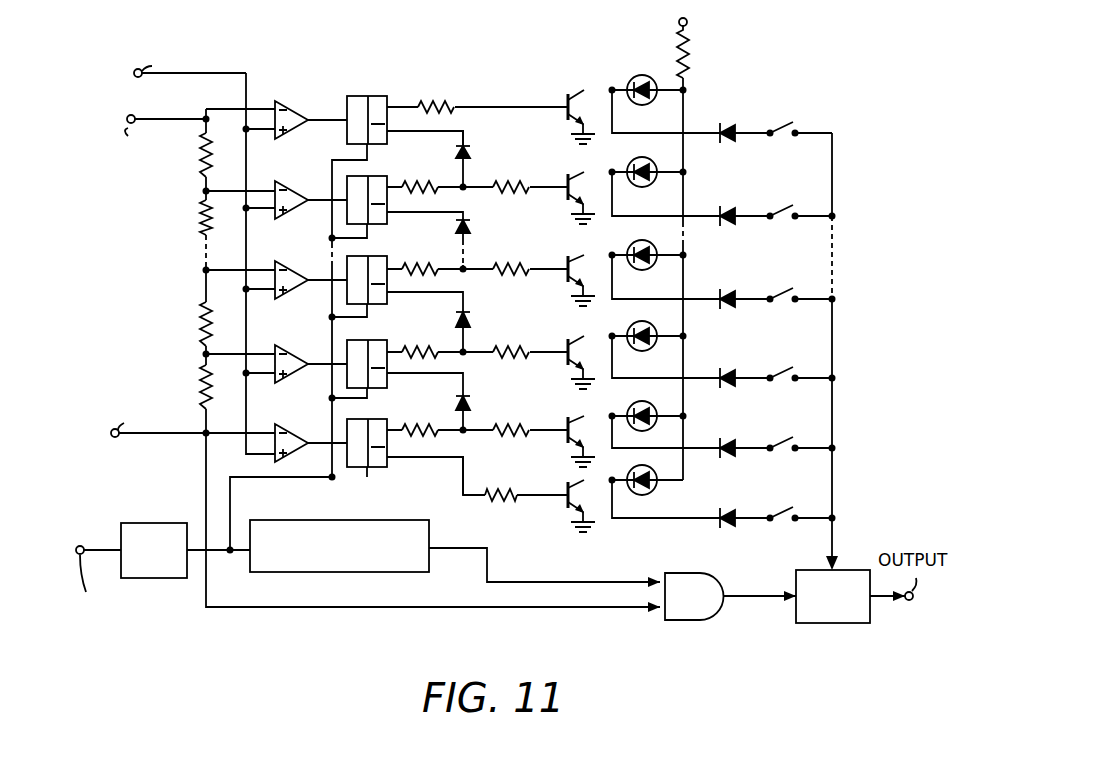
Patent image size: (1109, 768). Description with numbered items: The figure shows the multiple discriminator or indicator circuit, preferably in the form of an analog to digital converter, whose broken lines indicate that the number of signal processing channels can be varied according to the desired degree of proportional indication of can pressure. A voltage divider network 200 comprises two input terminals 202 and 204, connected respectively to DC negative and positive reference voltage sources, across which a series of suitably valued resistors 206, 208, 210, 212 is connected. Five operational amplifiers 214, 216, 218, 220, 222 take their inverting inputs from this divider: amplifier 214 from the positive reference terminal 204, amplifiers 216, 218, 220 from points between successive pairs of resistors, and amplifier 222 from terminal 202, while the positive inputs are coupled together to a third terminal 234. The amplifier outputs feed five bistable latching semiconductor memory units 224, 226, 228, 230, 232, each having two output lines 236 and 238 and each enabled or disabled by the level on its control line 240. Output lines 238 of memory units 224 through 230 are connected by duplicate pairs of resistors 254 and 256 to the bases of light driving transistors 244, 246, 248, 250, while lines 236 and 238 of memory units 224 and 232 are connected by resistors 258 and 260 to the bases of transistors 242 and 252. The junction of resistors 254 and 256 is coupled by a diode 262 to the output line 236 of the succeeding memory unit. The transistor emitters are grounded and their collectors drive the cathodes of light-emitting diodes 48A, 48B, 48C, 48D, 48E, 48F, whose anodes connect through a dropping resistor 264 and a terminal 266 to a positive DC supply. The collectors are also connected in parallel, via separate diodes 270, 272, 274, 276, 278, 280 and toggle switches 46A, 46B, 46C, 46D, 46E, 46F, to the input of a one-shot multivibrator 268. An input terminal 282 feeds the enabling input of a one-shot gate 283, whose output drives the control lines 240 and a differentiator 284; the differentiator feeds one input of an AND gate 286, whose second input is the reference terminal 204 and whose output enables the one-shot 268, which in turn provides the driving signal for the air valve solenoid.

The third terminal 234 is at (134, 70).
The input terminal 202 is at (128, 116).
The input terminal 204 is at (112, 430).
The resistor 212 is at (204, 163).
The resistor 210 is at (204, 212).
The resistor 208 is at (200, 322).
The resistor 206 is at (200, 378).
The voltage divider network 200 is at (150, 275).
The operational amplifier 222 is at (280, 101).
The operational amplifier 220 is at (300, 188).
The operational amplifier 218 is at (300, 268).
The operational amplifier 216 is at (300, 352).
The operational amplifier 214 is at (300, 431).
The bistable latching semiconductor memory unit 232 is at (349, 96).
The bistable latching semiconductor memory unit 230 is at (372, 176).
The bistable latching semiconductor memory unit 228 is at (368, 256).
The bistable latching semiconductor memory unit 226 is at (372, 340).
The bistable latching semiconductor memory unit 224 is at (372, 419).
The control line 240 is at (348, 479).
The output line 238 is at (400, 105).
The resistor 260 is at (456, 105).
The output line 236 is at (465, 131).
The diode 262 is at (470, 153).
The resistor 254 is at (440, 190).
The resistor 256 is at (510, 185).
The resistor 258 is at (502, 493).
The light driving transistor 252 is at (566, 94).
The light driving transistor 250 is at (566, 199).
The light driving transistor 248 is at (566, 262).
The light driving transistor 246 is at (571, 325).
The light driving transistor 244 is at (581, 409).
The light driving transistor 242 is at (566, 490).
The light-emitting diode 48F is at (641, 75).
The light-emitting diode 48E is at (654, 184).
The light-emitting diode 48D is at (654, 267).
The light-emitting diode 48C is at (654, 348).
The light-emitting diode 48B is at (650, 402).
The light-emitting diode 48A is at (642, 496).
The terminal 266 is at (688, 26).
The dropping resistor 264 is at (690, 60).
The diode 280 is at (729, 124).
The diode 278 is at (741, 184).
The diode 276 is at (735, 291).
The diode 274 is at (735, 370).
The diode 272 is at (735, 440).
The diode 270 is at (741, 487).
The toggle switch 46F is at (792, 124).
The toggle switch 46E is at (791, 207).
The toggle switch 46D is at (788, 291).
The toggle switch 46C is at (788, 370).
The toggle switch 46B is at (788, 440).
The toggle switch 46A is at (788, 510).
The input terminal 282 is at (76, 548).
The one-shot gate 283 is at (154, 579).
The differentiator 284 is at (386, 573).
The AND gate 286 is at (680, 572).
The one-shot multivibrator 268 is at (797, 570).